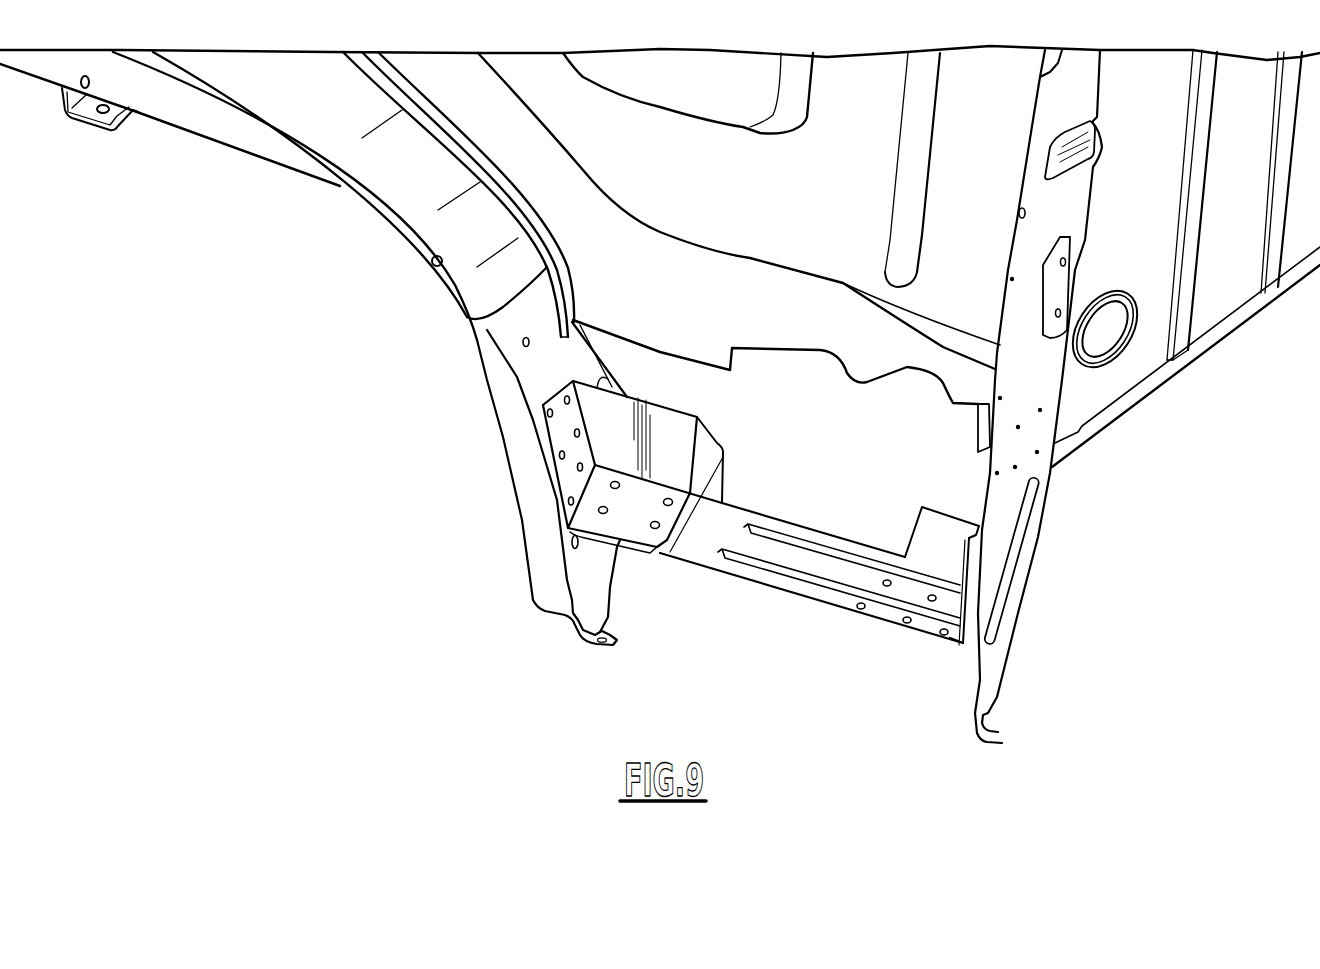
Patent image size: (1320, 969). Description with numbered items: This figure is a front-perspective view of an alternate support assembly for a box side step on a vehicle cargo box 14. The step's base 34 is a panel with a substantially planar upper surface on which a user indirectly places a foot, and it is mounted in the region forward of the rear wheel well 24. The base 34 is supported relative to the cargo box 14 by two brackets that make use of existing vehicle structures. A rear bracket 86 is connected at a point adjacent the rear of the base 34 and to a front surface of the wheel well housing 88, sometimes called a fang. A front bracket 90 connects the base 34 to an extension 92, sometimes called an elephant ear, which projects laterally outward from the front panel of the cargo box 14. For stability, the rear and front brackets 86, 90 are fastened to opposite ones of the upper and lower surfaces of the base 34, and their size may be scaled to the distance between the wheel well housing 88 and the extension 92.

The cargo box 14 is at (1088, 595).
The rear wheel well 24 is at (327, 434).
The base 34 is at (797, 577).
The rear bracket 86 is at (628, 445).
The wheel well housing 88 is at (536, 376).
The front bracket 90 is at (937, 533).
The extension 92 is at (1042, 477).